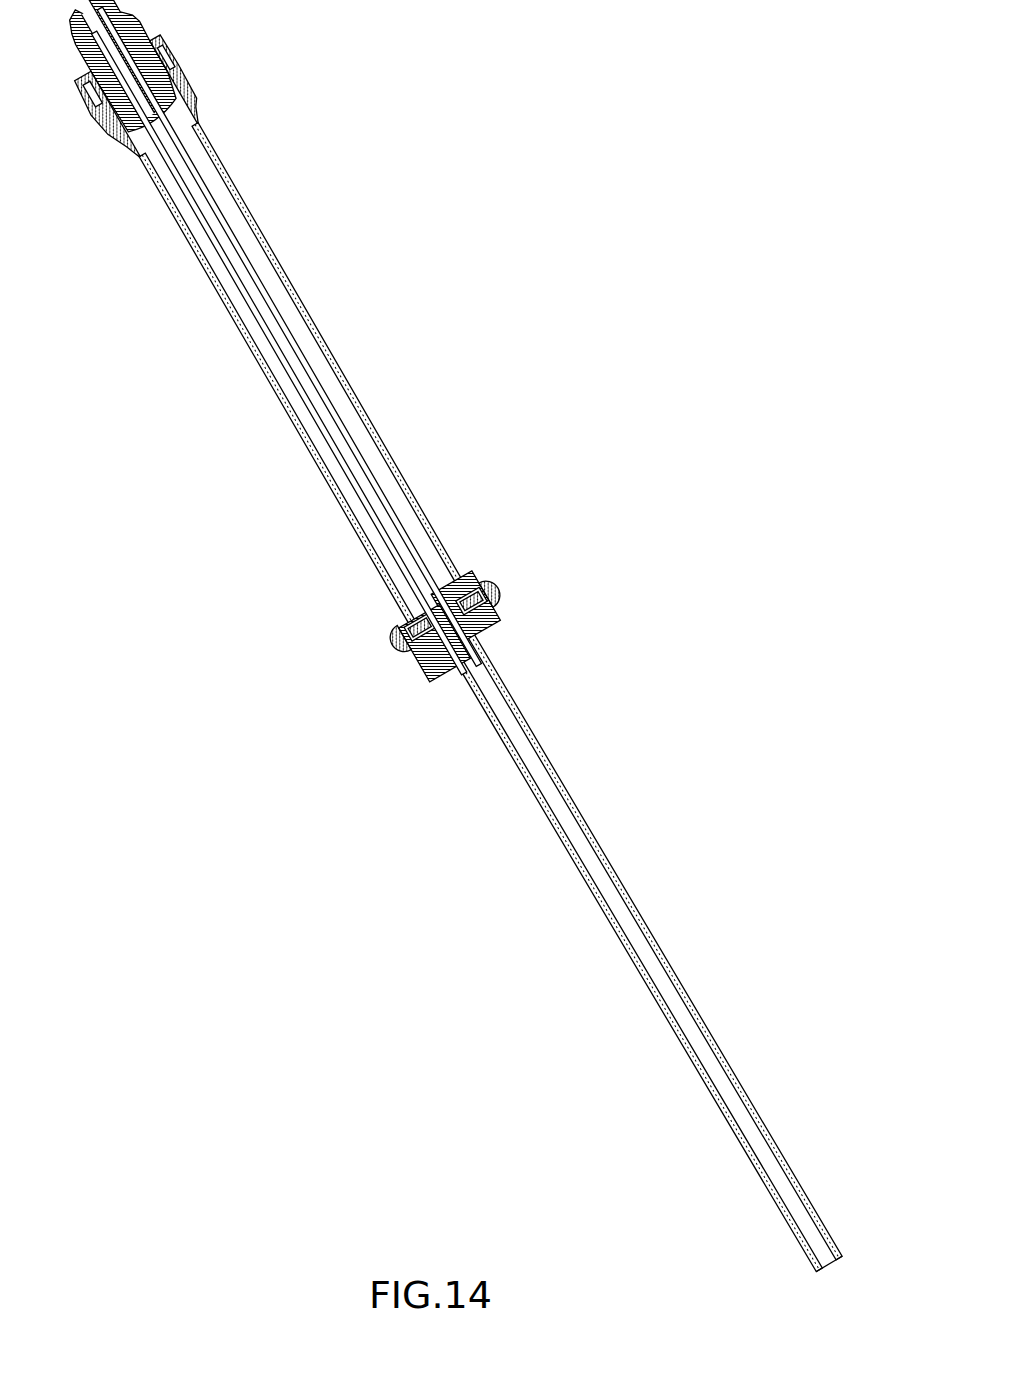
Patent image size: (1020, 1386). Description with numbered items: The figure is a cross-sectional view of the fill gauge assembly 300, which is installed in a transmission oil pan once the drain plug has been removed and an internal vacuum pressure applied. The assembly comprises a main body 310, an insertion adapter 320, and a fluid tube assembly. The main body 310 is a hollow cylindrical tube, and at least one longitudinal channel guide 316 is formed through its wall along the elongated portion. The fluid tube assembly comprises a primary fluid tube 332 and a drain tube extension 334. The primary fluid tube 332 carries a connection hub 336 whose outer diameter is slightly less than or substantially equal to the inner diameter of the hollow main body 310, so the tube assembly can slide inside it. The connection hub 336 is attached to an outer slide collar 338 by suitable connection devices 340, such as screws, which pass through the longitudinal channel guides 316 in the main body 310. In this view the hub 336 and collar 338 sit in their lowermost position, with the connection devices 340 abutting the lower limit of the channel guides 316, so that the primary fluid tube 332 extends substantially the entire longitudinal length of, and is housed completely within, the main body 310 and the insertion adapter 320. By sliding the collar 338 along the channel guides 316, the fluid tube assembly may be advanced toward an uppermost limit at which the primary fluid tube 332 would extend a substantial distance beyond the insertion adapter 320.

The fill gauge assembly 300 is at (645, 342).
The main body 310 is at (301, 312).
The longitudinal channel guide 316 is at (314, 383).
The insertion adapter 320 is at (98, 63).
The primary fluid tube 332 is at (385, 505).
The drain tube extension 334 is at (807, 1197).
The connection hub 336 is at (467, 578).
The outer slide collar 338 is at (502, 604).
The connection device 340 is at (396, 633).